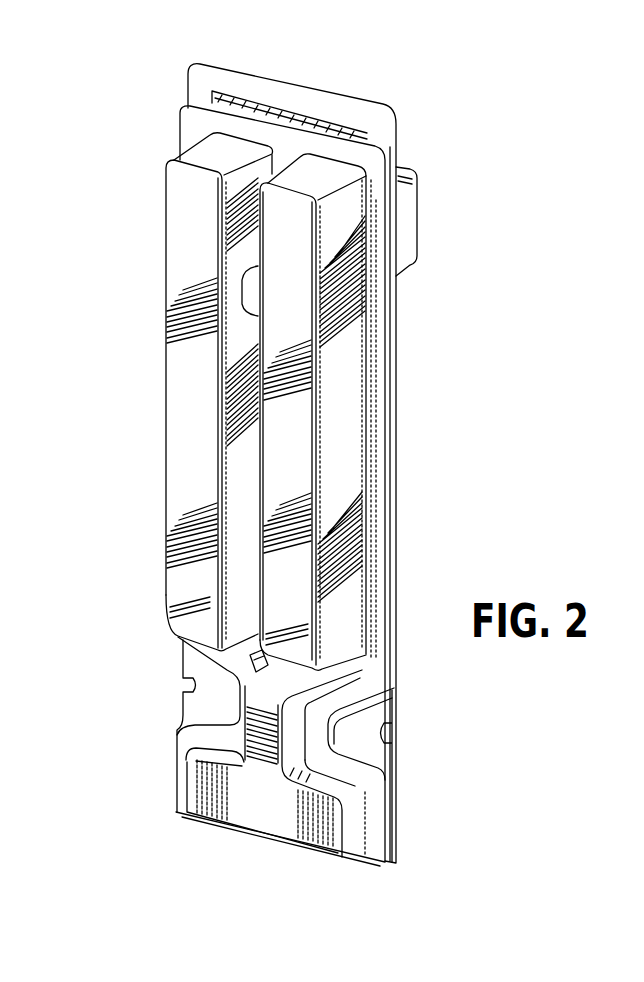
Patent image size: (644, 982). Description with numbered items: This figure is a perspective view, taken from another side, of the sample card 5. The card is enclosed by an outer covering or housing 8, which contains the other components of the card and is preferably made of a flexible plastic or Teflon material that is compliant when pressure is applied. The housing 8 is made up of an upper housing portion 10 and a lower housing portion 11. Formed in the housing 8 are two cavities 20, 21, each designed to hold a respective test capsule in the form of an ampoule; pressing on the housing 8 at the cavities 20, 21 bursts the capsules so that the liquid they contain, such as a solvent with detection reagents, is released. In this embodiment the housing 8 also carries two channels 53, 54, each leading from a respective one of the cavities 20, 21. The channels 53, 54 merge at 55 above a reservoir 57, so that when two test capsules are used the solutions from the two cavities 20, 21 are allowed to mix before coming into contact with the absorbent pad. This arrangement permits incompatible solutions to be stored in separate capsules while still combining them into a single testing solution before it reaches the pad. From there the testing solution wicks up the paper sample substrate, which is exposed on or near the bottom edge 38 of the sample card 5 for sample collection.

The housing 8 is at (158, 118).
The upper housing portion 10 is at (283, 150).
The sample card 5 is at (459, 184).
The cavity 20 is at (190, 432).
The cavity 21 is at (293, 442).
The channel 53 is at (230, 661).
The lower housing portion 11 is at (192, 734).
The channel 54 is at (302, 677).
The merge point of channels 55 is at (262, 732).
The reservoir 57 is at (257, 798).
The bottom edge 38 is at (357, 860).